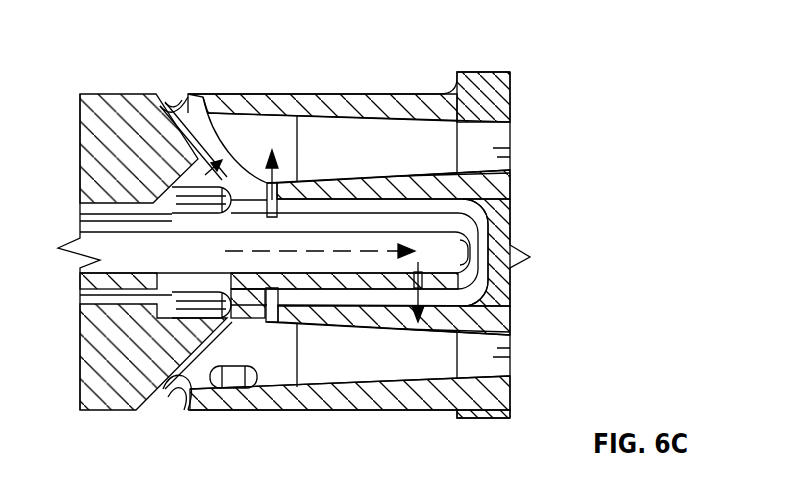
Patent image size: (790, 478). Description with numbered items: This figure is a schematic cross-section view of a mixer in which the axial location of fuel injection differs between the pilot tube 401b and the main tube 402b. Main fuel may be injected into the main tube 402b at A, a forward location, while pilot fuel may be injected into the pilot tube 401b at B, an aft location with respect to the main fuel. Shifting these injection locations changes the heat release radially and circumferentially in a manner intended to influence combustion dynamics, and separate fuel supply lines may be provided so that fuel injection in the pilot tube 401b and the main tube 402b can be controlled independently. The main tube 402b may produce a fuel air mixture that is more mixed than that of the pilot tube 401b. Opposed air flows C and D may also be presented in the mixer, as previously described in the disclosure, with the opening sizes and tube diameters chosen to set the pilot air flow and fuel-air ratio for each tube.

The main tube 402b is at (370, 133).
The pilot tube 401b is at (415, 370).
The opposed air flow D is at (167, 101).
The main fuel injection location A is at (188, 135).
The opposed air flow C is at (192, 193).
The pilot fuel injection location B is at (425, 292).